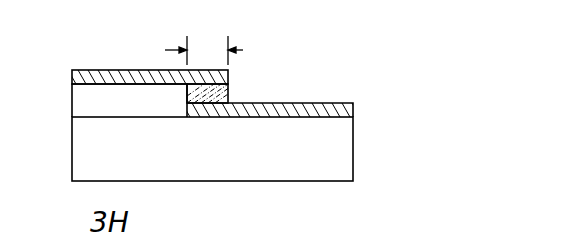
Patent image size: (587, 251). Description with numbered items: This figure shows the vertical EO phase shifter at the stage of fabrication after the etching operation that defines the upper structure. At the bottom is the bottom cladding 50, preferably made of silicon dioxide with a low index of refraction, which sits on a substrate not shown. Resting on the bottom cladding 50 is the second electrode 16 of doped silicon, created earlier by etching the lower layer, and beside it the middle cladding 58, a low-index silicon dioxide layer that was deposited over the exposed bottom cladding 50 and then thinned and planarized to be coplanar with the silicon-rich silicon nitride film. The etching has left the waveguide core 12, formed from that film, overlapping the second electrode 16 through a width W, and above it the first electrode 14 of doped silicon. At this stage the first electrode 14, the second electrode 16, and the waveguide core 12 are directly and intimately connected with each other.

The waveguide core 12 is at (228, 95).
The first electrode 14 is at (112, 78).
The second electrode 16 is at (354, 106).
The bottom cladding 50 is at (247, 158).
The middle cladding 58 is at (72, 90).
The width W is at (243, 50).